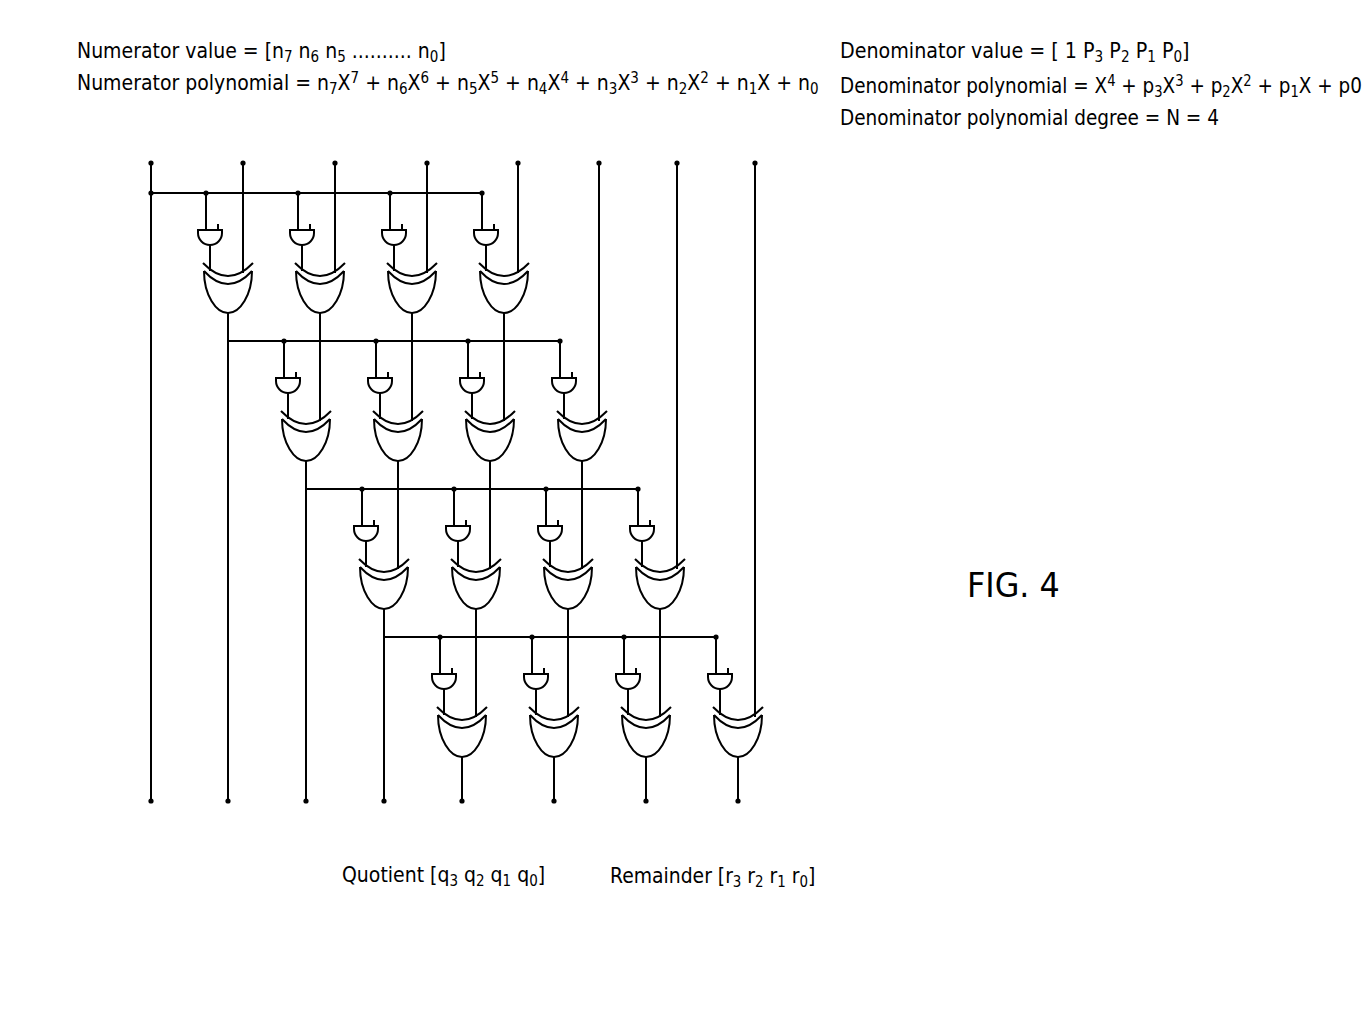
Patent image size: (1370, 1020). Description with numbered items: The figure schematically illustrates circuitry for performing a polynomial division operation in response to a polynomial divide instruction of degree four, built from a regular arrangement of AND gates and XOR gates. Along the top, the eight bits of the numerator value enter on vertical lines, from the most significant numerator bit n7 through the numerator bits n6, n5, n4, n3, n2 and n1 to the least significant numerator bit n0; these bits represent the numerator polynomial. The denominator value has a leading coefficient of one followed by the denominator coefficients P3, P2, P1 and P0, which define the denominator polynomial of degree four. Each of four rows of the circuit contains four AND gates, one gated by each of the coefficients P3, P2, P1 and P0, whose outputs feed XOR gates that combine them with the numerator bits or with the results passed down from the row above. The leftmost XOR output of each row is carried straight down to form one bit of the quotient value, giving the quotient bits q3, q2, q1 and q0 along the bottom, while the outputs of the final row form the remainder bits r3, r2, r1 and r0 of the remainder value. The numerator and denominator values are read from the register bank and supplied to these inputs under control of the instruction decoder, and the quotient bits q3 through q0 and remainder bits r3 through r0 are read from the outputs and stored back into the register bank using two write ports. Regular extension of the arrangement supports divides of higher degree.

The denominator coefficient p3 P3 is at (332, 452).
The denominator coefficient p2 P2 is at (424, 452).
The denominator coefficient p1 P1 is at (516, 452).
The denominator coefficient p0 P0 is at (608, 452).
The numerator bit n7 is at (151, 315).
The numerator bit n6 is at (243, 201).
The numerator bit n5 is at (335, 201).
The numerator bit n4 is at (427, 201).
The numerator bit n3 is at (518, 201).
The numerator bit n2 is at (599, 275).
The numerator bit n1 is at (677, 349).
The numerator bit n0 is at (755, 423).
The quotient bit q3 is at (151, 667).
The quotient bit q2 is at (228, 574).
The quotient bit q1 is at (306, 648).
The quotient bit q0 is at (384, 722).
The remainder bit r3 is at (462, 796).
The remainder bit r2 is at (554, 796).
The remainder bit r1 is at (646, 796).
The remainder bit r0 is at (738, 796).